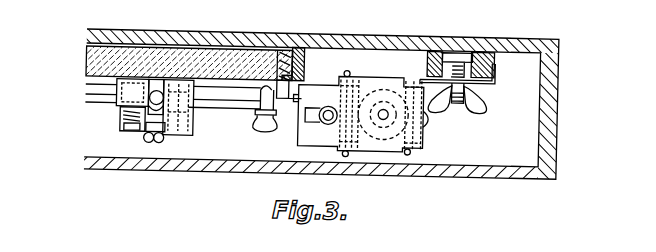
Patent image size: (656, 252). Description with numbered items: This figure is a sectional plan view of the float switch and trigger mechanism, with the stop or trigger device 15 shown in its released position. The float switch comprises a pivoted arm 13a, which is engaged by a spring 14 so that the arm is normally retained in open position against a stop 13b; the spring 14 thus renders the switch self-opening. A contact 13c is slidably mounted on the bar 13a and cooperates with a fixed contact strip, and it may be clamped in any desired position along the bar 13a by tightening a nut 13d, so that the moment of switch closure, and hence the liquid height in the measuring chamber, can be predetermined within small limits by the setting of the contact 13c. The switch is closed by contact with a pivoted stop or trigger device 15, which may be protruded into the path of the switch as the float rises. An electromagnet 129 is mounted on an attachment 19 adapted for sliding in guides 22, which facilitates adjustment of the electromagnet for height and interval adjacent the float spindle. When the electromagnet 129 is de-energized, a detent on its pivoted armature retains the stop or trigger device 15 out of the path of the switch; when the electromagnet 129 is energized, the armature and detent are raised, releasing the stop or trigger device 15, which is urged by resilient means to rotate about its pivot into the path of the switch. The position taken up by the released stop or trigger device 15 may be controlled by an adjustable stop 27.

The pivoted arm 13a is at (229, 75).
The stop 13b is at (295, 44).
The slidable contact 13c is at (268, 74).
The nut 13d is at (270, 126).
The spring 14 is at (230, 83).
The stop or trigger device 15 is at (313, 128).
The attachment 19 is at (492, 72).
The guides 22 is at (483, 58).
The adjustable stop 27 is at (329, 100).
The electromagnet 129 is at (390, 126).